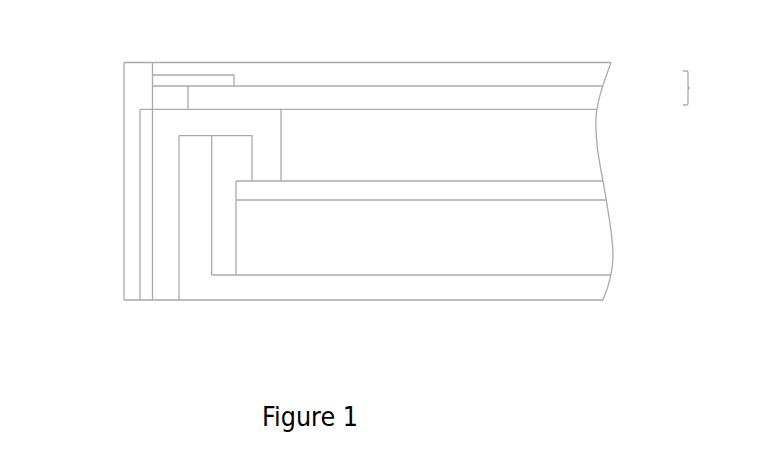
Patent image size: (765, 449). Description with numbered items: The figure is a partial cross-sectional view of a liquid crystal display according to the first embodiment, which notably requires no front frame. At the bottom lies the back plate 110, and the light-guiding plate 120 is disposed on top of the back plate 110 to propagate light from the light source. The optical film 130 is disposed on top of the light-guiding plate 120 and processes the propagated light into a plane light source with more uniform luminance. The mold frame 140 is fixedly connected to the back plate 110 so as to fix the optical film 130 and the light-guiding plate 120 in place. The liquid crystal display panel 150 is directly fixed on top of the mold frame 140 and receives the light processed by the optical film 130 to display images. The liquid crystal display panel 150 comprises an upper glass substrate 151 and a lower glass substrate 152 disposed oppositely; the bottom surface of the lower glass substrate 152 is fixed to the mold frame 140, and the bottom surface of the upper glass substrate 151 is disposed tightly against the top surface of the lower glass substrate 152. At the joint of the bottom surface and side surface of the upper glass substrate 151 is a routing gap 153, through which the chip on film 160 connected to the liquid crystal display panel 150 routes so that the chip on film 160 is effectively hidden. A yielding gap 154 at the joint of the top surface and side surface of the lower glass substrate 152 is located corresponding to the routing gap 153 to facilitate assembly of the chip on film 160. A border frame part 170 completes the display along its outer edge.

The back plate 110 is at (362, 288).
The light-guiding plate 120 is at (551, 241).
The optical film 130 is at (548, 192).
The mold frame 140 is at (167, 247).
The liquid crystal display panel 150 is at (700, 88).
The upper glass substrate 151 is at (578, 74).
The lower glass substrate 152 is at (578, 100).
The routing gap 153 is at (198, 82).
The yielding gap 154 is at (160, 91).
The chip on film 160 is at (188, 86).
The border frame part 170 is at (132, 218).